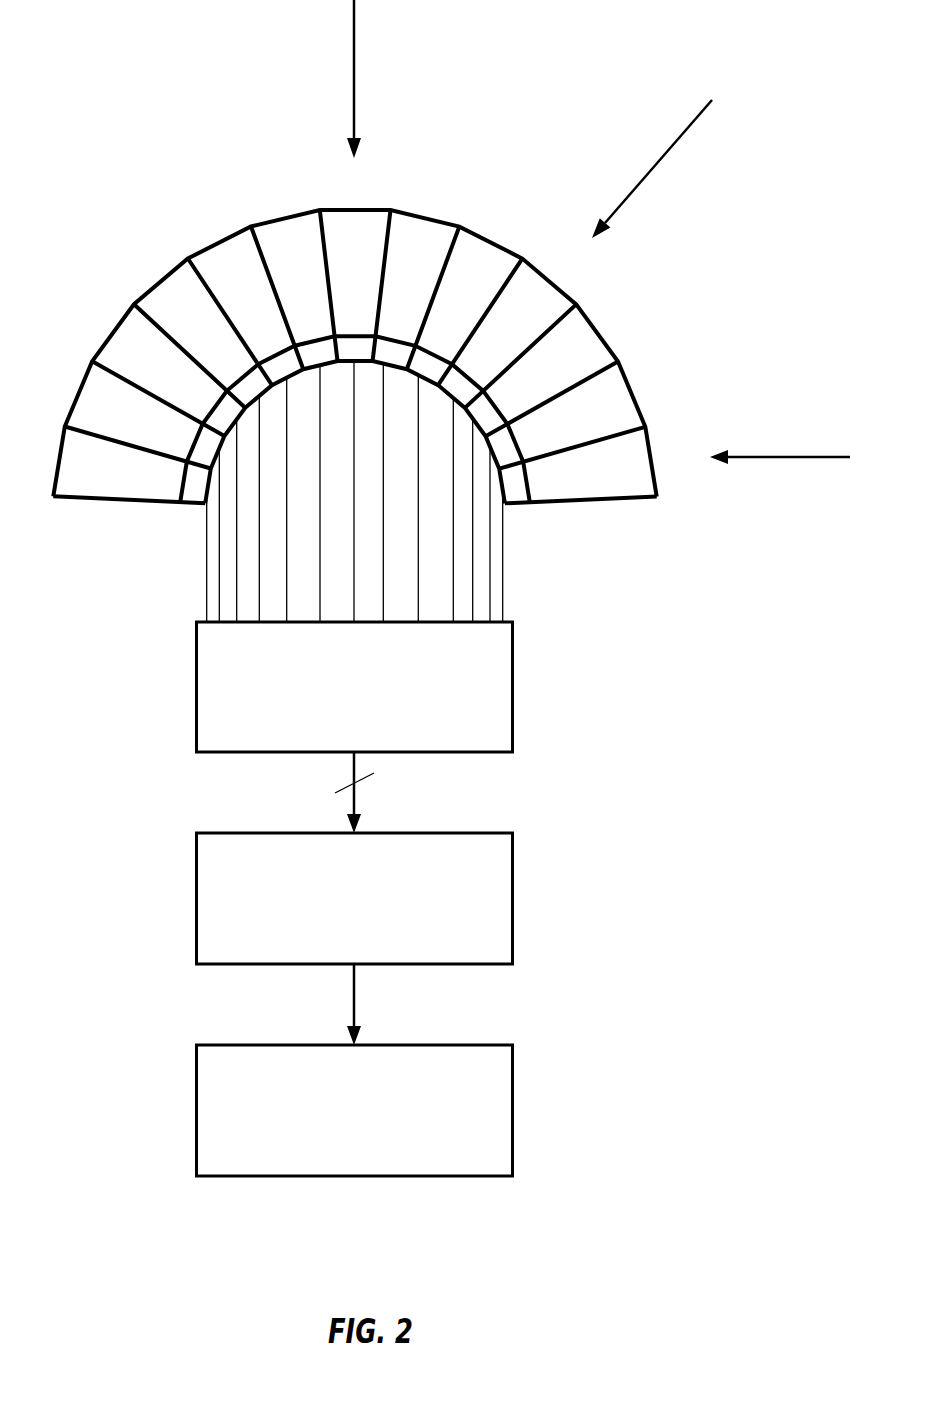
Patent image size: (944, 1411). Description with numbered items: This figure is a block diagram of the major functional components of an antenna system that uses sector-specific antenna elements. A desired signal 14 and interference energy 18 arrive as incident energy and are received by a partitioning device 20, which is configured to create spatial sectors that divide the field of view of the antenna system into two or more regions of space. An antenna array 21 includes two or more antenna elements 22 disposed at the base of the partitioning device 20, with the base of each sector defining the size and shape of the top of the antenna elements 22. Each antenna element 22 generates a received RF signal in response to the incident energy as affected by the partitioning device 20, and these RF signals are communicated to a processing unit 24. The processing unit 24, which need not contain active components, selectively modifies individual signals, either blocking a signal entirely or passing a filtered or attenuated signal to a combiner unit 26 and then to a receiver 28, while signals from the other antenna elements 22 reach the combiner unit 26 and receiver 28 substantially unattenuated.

The desired signal 14 is at (352, 78).
The interference energy 18 is at (650, 170).
The partitioning device 20 is at (752, 457).
The antenna array 21 is at (532, 530).
The antenna elements 22 is at (198, 483).
The processing unit 24 is at (197, 683).
The combiner unit 26 is at (197, 889).
The receiver 28 is at (197, 1108).